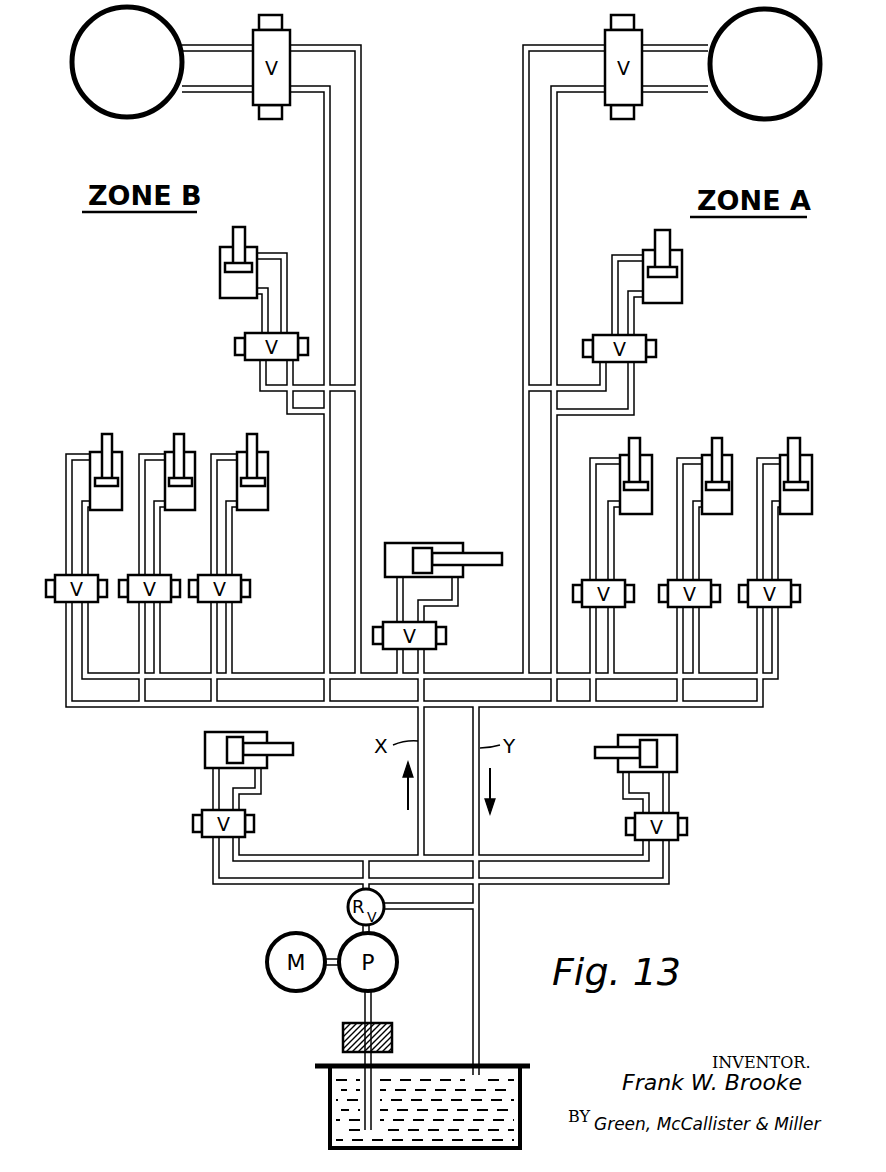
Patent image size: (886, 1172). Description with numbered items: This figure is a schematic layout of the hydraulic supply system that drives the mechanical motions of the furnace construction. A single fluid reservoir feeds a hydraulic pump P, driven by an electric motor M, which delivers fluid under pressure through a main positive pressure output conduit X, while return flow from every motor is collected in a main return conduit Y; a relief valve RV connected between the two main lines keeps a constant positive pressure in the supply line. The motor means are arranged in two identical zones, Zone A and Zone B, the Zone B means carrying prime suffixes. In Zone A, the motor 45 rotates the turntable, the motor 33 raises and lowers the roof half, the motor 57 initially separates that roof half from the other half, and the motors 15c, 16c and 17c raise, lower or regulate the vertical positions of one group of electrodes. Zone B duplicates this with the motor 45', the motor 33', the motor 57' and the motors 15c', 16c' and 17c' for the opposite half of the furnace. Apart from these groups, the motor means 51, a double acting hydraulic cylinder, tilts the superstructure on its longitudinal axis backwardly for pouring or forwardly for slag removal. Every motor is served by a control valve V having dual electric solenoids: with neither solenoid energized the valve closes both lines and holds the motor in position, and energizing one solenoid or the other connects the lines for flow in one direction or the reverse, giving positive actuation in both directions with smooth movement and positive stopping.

The motor 45 is at (781, 64).
The motor 45' is at (105, 60).
The motor 33 is at (683, 271).
The motor 33' is at (212, 267).
The motor 15c is at (652, 465).
The motor 16c is at (734, 465).
The motor 17c is at (811, 465).
The motor 15c' is at (267, 459).
The motor 16c' is at (194, 459).
The motor 17c' is at (118, 459).
The motor means 51 is at (463, 545).
The motor 57 is at (661, 755).
The motor 57' is at (220, 750).